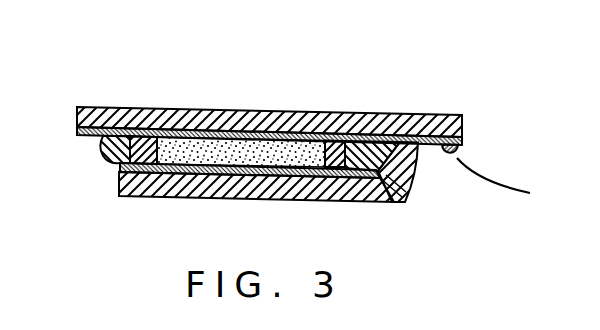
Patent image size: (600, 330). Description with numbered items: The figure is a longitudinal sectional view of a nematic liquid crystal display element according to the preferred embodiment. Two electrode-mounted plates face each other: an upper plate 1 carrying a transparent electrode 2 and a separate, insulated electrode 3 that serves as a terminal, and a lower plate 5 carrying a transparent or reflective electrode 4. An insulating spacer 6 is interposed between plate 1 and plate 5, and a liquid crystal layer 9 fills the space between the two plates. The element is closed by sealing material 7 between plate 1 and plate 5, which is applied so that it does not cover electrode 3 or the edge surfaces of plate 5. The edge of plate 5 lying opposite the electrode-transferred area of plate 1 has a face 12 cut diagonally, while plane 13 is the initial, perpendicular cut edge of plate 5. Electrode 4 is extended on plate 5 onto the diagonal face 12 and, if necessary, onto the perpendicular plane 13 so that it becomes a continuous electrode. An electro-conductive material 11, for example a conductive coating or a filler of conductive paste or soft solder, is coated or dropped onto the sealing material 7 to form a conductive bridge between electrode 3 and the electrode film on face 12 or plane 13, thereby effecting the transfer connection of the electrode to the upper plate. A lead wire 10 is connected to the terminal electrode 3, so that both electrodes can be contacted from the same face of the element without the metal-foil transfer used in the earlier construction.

The plate 1 is at (118, 110).
The transparent electrode 2 is at (159, 133).
The electrode 3 is at (416, 142).
The transparent or reflective electrode 4 is at (240, 172).
The plate 5 is at (190, 188).
The insulating spacer 6 is at (334, 150).
The sealing material 7 is at (366, 152).
The liquid crystal layer 9 is at (232, 147).
The lead wire 10 is at (500, 188).
The electro-conductive material 11 is at (412, 165).
The diagonally cut face 12 is at (366, 195).
The perpendicular plane 13 is at (395, 204).